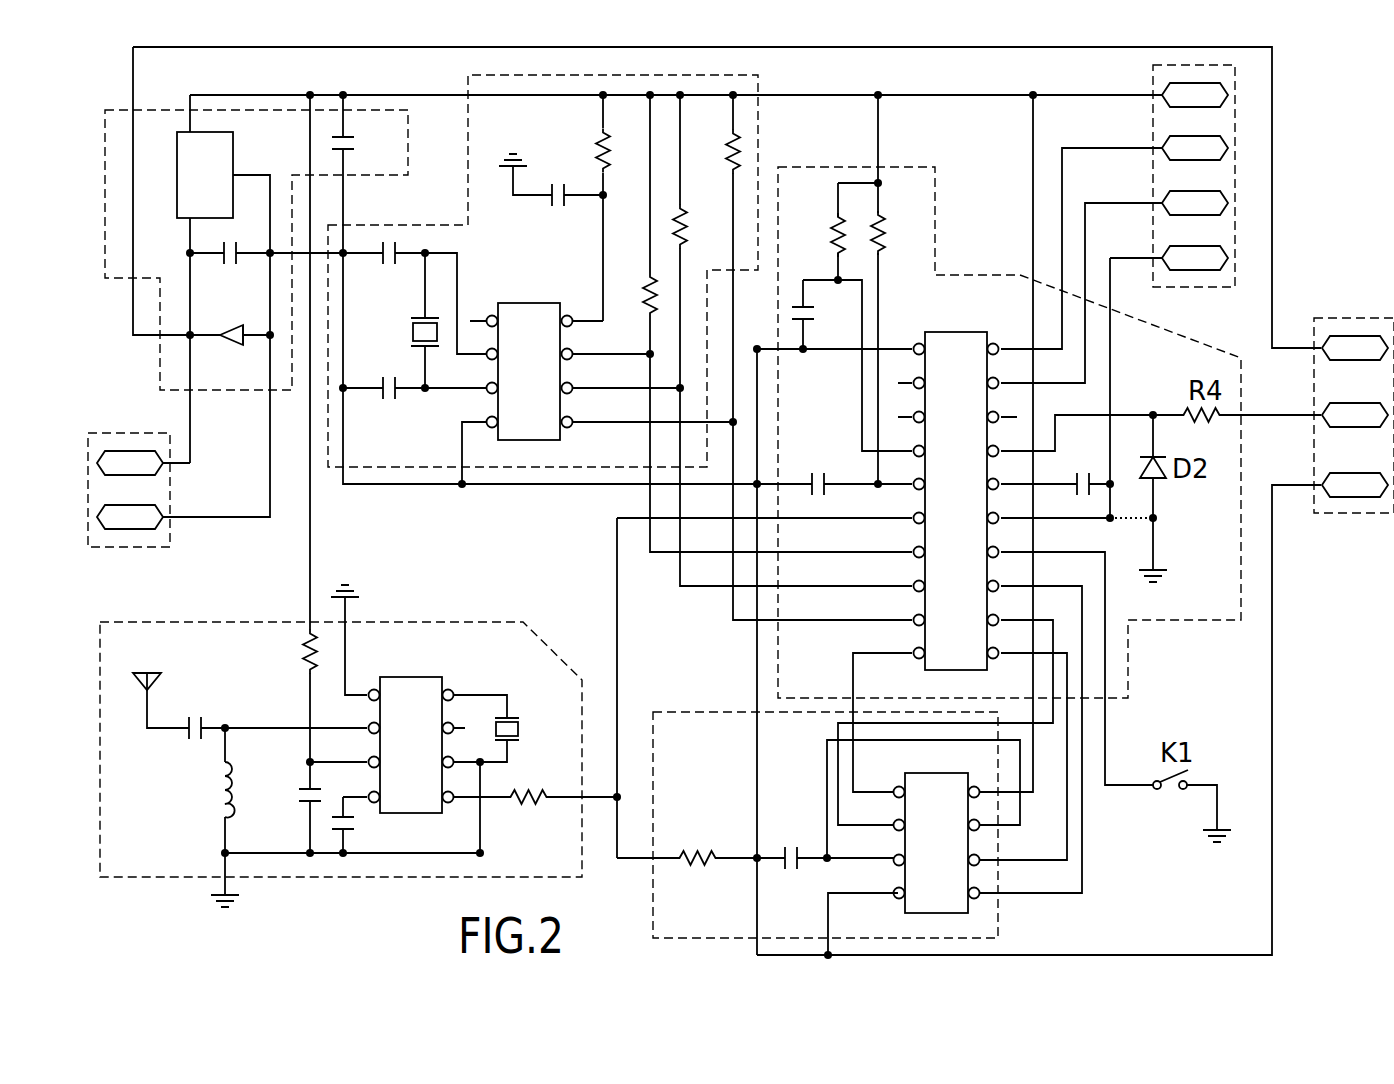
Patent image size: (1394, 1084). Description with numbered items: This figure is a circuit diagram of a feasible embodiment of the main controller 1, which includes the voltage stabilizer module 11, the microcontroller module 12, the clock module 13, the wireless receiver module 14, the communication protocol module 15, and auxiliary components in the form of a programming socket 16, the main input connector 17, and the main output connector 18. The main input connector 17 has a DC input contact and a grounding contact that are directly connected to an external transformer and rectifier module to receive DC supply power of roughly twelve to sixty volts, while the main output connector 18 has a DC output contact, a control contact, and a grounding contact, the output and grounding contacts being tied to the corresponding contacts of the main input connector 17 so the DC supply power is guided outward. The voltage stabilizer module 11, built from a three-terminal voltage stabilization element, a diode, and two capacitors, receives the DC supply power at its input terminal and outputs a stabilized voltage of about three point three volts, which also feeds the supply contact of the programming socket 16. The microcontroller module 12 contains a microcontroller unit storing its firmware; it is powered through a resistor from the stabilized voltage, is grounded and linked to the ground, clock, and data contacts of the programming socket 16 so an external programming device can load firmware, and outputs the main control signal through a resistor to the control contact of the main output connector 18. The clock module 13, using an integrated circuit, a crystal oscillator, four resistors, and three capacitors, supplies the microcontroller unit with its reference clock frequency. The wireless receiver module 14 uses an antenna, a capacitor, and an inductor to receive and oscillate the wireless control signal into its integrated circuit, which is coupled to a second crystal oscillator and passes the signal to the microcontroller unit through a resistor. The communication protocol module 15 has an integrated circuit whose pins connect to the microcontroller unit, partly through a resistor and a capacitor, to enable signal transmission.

The main controller 1 is at (1293, 112).
The voltage stabilizer module 11 is at (118, 110).
The microcontroller module 12 is at (983, 275).
The clock module 13 is at (385, 470).
The wireless receiver module 14 is at (462, 622).
The communication protocol module 15 is at (999, 913).
The programming socket 16 is at (1235, 183).
The main input connector 17 is at (108, 433).
The main output connector 18 is at (1365, 318).